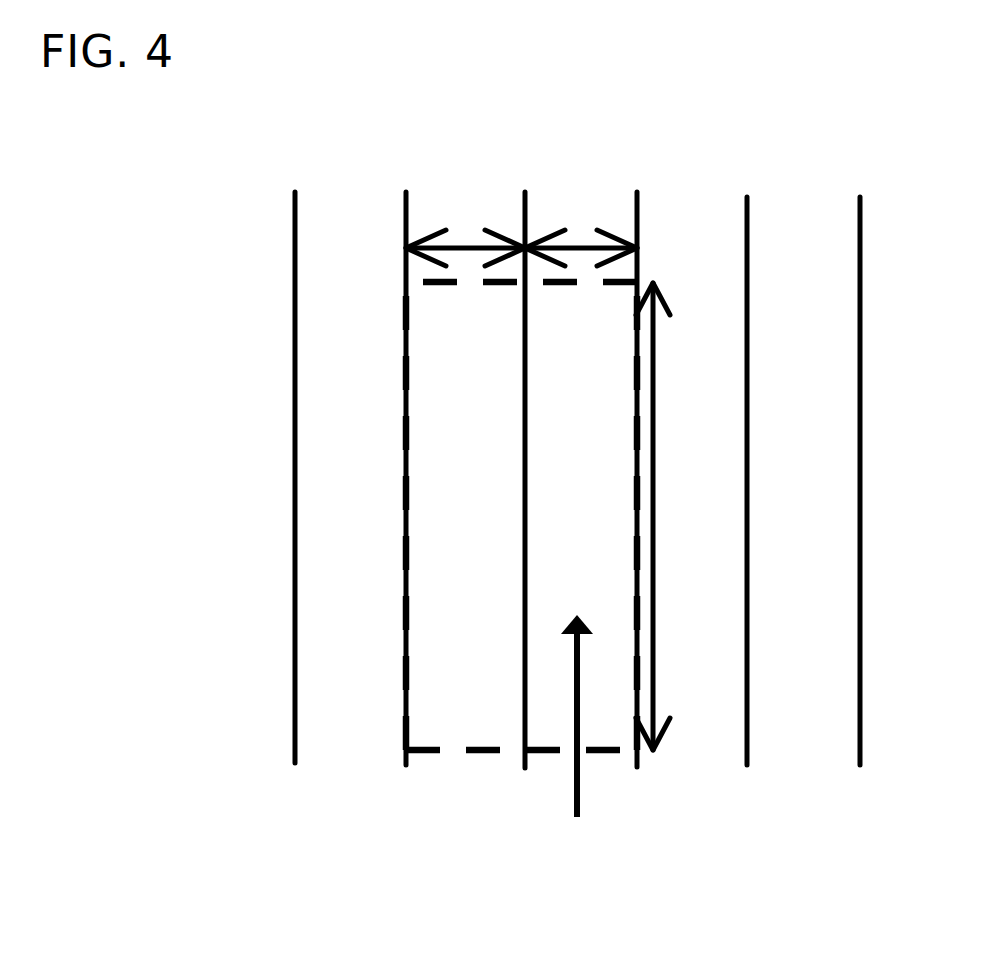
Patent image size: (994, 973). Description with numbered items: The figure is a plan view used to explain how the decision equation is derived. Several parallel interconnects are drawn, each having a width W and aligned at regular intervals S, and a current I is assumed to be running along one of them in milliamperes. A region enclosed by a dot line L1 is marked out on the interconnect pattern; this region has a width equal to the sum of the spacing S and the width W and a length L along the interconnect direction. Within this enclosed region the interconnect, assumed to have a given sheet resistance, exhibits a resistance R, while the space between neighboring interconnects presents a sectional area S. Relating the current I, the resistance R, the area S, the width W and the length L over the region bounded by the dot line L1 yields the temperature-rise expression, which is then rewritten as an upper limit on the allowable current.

The dot line L1 is at (407, 347).
The sectional area of the space between the interconnects S is at (460, 680).
The interconnect width W is at (581, 219).
The length of the enclosed region L is at (673, 516).
The current I is at (580, 751).
The resistance of the interconnect R is at (559, 498).